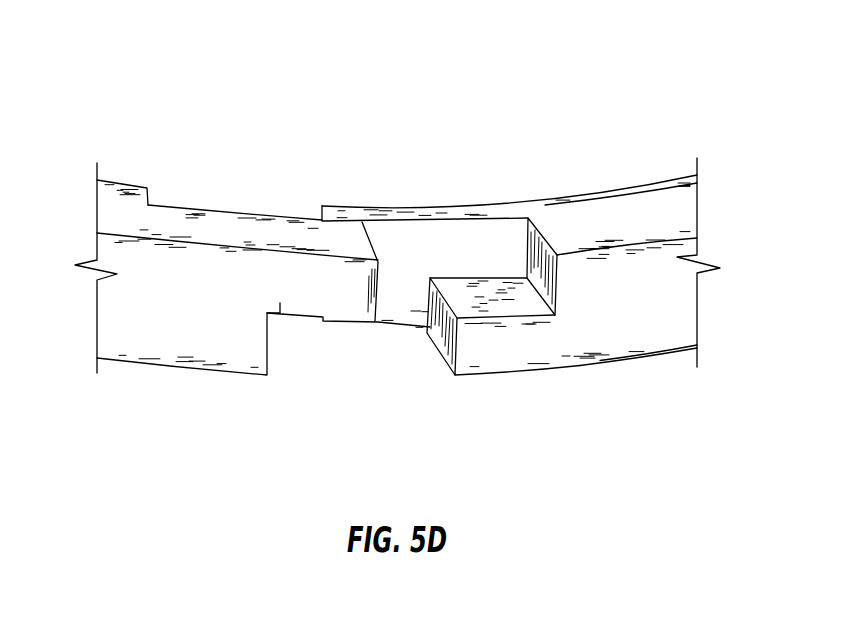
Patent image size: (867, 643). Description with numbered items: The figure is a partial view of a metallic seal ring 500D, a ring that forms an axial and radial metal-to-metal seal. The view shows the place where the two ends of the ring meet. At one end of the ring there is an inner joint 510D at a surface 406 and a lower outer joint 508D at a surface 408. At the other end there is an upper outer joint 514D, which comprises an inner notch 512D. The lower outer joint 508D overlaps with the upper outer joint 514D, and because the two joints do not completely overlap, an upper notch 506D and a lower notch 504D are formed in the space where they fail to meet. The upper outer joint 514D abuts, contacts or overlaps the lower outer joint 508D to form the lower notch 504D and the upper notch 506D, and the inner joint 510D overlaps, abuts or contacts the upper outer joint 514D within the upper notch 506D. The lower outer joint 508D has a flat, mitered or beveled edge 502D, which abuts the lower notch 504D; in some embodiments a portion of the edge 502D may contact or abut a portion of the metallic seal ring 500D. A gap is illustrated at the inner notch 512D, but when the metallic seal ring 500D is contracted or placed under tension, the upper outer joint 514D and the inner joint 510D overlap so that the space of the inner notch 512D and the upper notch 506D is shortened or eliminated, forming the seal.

The metallic seal ring 500D is at (619, 70).
The surface 406 is at (611, 186).
The surface 408 is at (625, 374).
The inner notch 512D is at (302, 220).
The inner joint 510D is at (432, 207).
The upper notch 506D is at (540, 257).
The edge 502D is at (448, 340).
The lower outer joint 508D is at (503, 350).
The lower notch 504D is at (298, 345).
The upper outer joint 514D is at (278, 304).